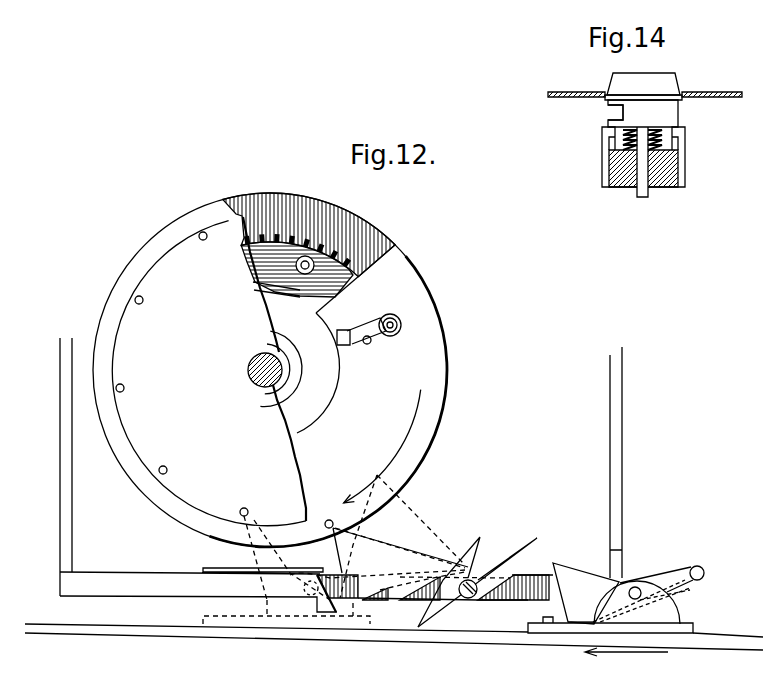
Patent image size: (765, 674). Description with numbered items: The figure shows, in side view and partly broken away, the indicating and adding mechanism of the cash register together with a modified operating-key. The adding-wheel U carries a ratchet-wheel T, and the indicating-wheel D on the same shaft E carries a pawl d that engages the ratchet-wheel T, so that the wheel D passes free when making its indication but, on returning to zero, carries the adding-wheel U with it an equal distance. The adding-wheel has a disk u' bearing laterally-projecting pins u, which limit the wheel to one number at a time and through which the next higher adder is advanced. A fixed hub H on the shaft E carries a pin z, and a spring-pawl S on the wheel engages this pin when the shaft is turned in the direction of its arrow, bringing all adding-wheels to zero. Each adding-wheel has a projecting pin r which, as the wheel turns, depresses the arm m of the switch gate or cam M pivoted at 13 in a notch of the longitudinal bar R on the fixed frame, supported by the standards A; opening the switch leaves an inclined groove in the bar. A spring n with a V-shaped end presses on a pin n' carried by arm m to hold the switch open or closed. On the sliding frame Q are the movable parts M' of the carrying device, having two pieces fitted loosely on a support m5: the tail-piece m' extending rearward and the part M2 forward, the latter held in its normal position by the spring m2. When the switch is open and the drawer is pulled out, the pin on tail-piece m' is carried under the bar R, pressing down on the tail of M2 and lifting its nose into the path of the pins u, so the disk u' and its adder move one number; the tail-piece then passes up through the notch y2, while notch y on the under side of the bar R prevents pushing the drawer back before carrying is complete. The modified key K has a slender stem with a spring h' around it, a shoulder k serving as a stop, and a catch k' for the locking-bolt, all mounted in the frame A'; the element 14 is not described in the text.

In FIG. 12, the adding-wheel U is at (270, 370).
In FIG. 12, the laterally-projecting pins u is at (186, 374).
In FIG. 12, the disk u' is at (209, 373).
In FIG. 12, the indicating-wheel D is at (309, 235).
In FIG. 12, the ratchet-wheel T is at (318, 369).
In FIG. 12, the pawl d is at (310, 271).
In FIG. 12, the fixed hub H is at (299, 373).
In FIG. 12, the shaft E is at (271, 369).
In FIG. 12, the pin z is at (329, 372).
In FIG. 12, the spring-pawl S is at (388, 334).
In FIG. 12, the projecting pin r is at (328, 515).
In FIG. 12, the arm m is at (356, 537).
In FIG. 12, the frame standard A is at (333, 467).
In FIG. 12, the longitudinal bar R is at (306, 584).
In FIG. 12, the pin n' is at (400, 573).
In FIG. 12, the spring n is at (449, 577).
In FIG. 12, the switch gate or cam M is at (477, 582).
In FIG. 12, the pivot 13 is at (467, 599).
In FIG. 12, the block 14 is at (503, 600).
In FIG. 12, the notch y is at (378, 601).
In FIG. 12, the notch y2 is at (318, 650).
In FIG. 12, the sliding frame Q is at (394, 638).
In FIG. 12, the part of carrying device M2 is at (586, 593).
In FIG. 12, the spring m2 is at (581, 615).
In FIG. 12, the movable parts of carrying devices M' is at (637, 602).
In FIG. 12, the tail-piece m' is at (663, 570).
In FIG. 12, the support m5 is at (683, 600).
In FIG. 14, the operating-key K is at (672, 85).
In FIG. 14, the shoulder or projection k is at (651, 113).
In FIG. 14, the catch k' is at (607, 113).
In FIG. 14, the spiral spring h' is at (664, 146).
In FIG. 14, the key frame A' is at (645, 144).